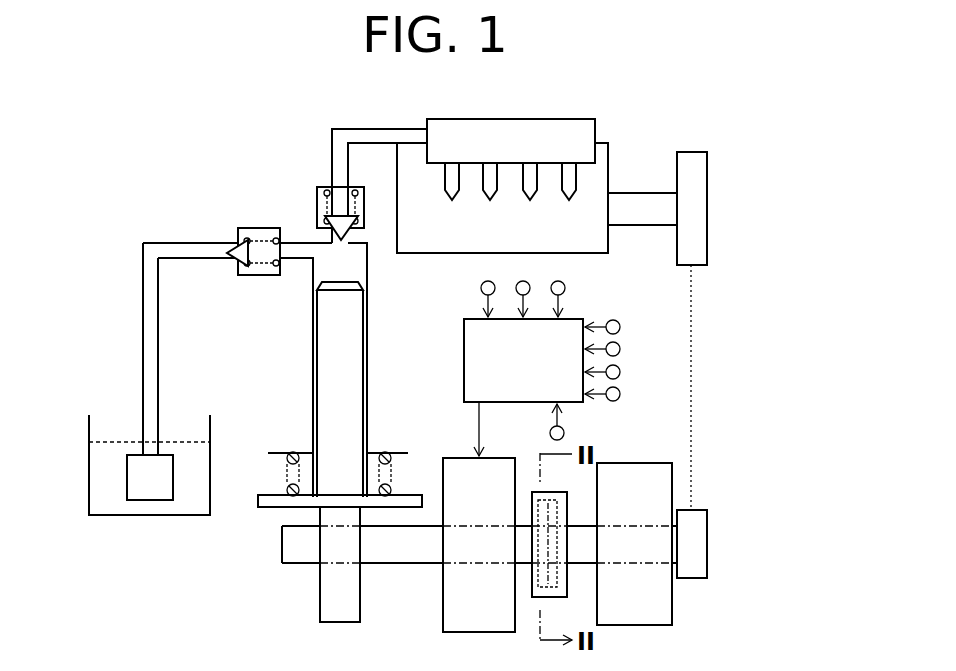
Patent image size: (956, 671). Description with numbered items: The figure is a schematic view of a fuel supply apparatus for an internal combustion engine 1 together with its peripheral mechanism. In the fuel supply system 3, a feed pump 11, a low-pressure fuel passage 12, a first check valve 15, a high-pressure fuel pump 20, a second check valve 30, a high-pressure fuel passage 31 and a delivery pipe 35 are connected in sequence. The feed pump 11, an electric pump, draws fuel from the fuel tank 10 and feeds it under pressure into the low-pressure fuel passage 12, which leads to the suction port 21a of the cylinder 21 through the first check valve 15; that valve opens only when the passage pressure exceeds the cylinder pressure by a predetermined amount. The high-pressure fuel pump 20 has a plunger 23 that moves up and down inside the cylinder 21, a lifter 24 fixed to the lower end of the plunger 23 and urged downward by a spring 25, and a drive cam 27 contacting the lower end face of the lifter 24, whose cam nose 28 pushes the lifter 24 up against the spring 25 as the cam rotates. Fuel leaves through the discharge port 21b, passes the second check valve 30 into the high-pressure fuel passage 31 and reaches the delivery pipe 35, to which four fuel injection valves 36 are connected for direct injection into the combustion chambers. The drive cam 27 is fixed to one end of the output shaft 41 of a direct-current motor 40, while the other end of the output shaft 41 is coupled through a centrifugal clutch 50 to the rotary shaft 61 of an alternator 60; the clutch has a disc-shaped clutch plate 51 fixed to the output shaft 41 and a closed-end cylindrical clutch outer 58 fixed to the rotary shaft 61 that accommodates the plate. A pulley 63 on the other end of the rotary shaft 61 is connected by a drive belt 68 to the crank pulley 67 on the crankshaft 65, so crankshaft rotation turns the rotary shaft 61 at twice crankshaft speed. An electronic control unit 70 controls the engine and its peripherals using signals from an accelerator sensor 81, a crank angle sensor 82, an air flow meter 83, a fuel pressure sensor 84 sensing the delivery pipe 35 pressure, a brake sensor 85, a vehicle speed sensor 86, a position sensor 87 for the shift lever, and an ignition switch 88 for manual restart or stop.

The internal combustion engine 1 is at (664, 138).
The fuel supply system 3 is at (178, 231).
The fuel tank 10 is at (212, 450).
The feed pump 11 is at (176, 492).
The low-pressure fuel passage 12 is at (197, 261).
The first check valve 15 is at (243, 277).
The high-pressure fuel pump 20 is at (273, 518).
The cylinder 21 is at (369, 280).
The suction port 21a is at (305, 259).
The discharge port 21b is at (334, 241).
The plunger 23 is at (366, 346).
The lifter 24 is at (410, 496).
The spring 25 is at (288, 488).
The drive cam 27 is at (318, 580).
The cam nose 28 is at (319, 612).
The second check valve 30 is at (366, 198).
The high-pressure fuel passage 31 is at (331, 137).
The delivery pipe 35 is at (597, 128).
The fuel injection valve 36 is at (566, 184).
The motor 40 is at (441, 612).
The output shaft 41 is at (390, 565).
The centrifugal clutch 50 is at (532, 490).
The clutch plate 51 is at (560, 572).
The clutch outer 58 is at (574, 588).
The alternator 60 is at (661, 462).
The rotary shaft 61 is at (585, 526).
The pulley 63 is at (709, 545).
The crankshaft 65 is at (642, 227).
The crank pulley 67 is at (709, 208).
The drive belt 68 is at (694, 272).
The electronic control unit 70 is at (463, 372).
The accelerator sensor 81 is at (481, 288).
The crank angle sensor 82 is at (521, 281).
The air flow meter 83 is at (566, 288).
The fuel pressure sensor 84 is at (621, 327).
The brake sensor 85 is at (621, 349).
The vehicle speed sensor 86 is at (621, 372).
The position sensor 87 is at (621, 394).
The ignition switch 88 is at (565, 433).